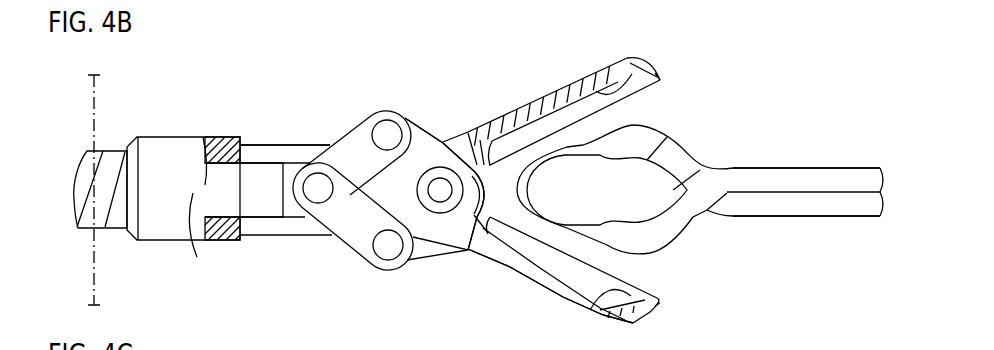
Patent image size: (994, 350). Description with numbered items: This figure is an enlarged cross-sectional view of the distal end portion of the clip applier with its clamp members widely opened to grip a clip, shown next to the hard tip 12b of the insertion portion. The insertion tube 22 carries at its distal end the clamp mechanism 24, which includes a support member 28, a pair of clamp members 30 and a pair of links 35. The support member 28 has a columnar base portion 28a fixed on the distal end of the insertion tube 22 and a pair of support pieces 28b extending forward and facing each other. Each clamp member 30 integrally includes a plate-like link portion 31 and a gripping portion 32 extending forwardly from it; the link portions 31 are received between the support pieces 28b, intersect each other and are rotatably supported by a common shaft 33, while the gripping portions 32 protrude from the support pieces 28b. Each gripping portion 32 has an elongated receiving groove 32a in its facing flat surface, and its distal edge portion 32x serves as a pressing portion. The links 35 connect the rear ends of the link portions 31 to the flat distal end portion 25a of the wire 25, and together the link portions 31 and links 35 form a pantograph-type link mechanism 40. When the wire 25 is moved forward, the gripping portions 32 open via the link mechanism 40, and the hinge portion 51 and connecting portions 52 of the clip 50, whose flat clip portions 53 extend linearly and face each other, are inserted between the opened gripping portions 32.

The hard tip 12b is at (97, 105).
The insertion tube 22 is at (117, 150).
The clamp mechanism 24 is at (443, 122).
The wire 25 is at (207, 190).
The distal end portion of the wire 25a is at (293, 210).
The support member 28 is at (272, 145).
The base portion 28a is at (230, 138).
The support pieces 28b is at (305, 145).
The clamp members 30 is at (538, 92).
The link portion 31 is at (415, 142).
The gripping portion 32 is at (564, 86).
The receiving groove 32a is at (638, 349).
The distal edge portion 32x is at (661, 82).
The common shaft 33 is at (440, 197).
The links 35 is at (355, 155).
The link mechanism 40 is at (393, 110).
The clip 50 is at (790, 163).
The hinge portion 51 is at (527, 190).
The connecting portions 52 is at (668, 138).
The clip portions 53 is at (827, 167).